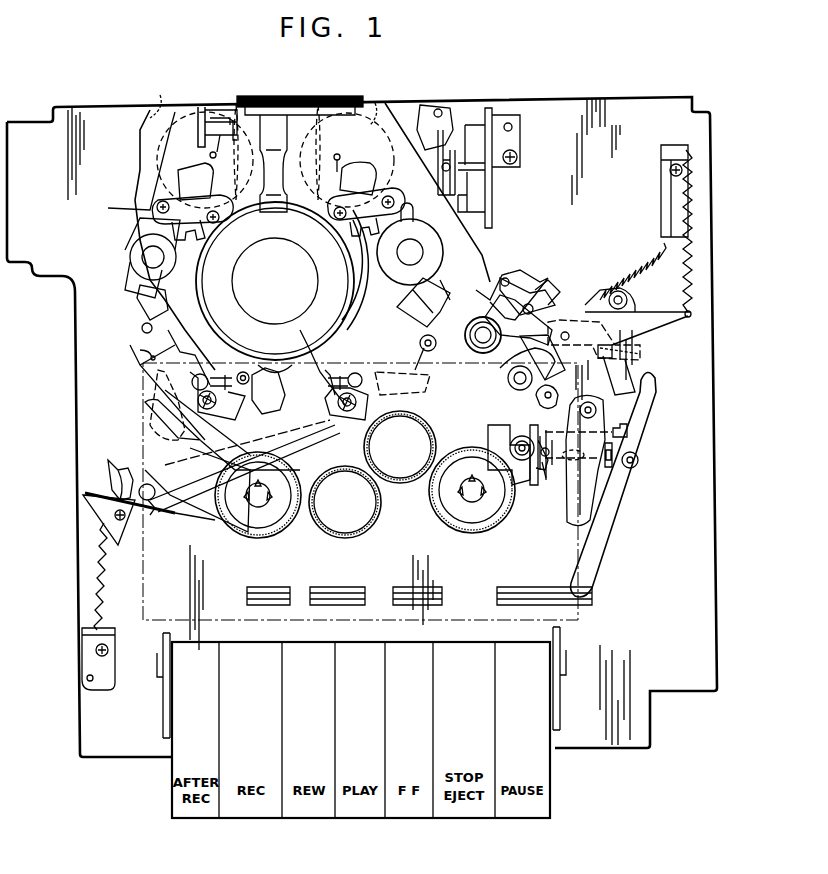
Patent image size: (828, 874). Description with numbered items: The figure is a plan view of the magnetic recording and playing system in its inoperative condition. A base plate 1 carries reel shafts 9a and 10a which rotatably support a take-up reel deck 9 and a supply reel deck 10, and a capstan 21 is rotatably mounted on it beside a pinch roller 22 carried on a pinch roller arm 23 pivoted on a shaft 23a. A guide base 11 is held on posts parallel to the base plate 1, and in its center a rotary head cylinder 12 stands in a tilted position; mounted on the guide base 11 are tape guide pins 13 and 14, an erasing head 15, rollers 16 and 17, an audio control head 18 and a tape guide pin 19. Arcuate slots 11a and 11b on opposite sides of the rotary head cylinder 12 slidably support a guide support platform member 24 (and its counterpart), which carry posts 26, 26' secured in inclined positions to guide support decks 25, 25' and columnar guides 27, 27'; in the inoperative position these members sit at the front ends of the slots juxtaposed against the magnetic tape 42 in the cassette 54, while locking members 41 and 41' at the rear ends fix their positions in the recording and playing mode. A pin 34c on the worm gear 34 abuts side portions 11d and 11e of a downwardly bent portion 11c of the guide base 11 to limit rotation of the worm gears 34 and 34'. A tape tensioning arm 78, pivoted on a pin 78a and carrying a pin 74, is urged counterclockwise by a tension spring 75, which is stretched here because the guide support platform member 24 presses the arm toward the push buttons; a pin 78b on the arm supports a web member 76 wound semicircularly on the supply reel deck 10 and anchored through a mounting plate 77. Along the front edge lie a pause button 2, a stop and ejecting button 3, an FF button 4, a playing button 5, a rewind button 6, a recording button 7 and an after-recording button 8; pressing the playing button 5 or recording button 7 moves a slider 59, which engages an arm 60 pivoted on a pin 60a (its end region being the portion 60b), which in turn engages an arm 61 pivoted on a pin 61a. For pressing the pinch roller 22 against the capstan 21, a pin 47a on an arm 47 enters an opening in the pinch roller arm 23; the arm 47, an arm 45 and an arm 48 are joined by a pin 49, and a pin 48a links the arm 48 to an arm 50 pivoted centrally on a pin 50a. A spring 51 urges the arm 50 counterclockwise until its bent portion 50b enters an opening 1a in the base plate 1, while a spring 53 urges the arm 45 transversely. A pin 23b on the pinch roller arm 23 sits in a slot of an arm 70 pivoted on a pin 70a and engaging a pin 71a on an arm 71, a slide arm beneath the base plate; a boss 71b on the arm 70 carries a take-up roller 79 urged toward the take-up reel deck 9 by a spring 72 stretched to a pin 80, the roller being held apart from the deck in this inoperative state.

The base plate 1 is at (90, 100).
The opening 1a is at (628, 360).
The pause button 2 is at (544, 818).
The stop and ejecting button 3 is at (486, 818).
The FF button 4 is at (426, 818).
The playing button 5 is at (378, 818).
The rewind button 6 is at (329, 818).
The recording button 7 is at (268, 818).
The after-recording button 8 is at (206, 818).
The take-up reel deck 9 is at (463, 458).
The reel shaft 9a is at (465, 500).
The supply reel deck 10 is at (292, 475).
The reel shaft 10a is at (262, 505).
The guide base 11 is at (135, 128).
The arcuate slot 11a is at (170, 330).
The arcuate slot 11b is at (330, 340).
The downwardly bent portion 11c is at (220, 108).
The side portion 11d is at (234, 110).
The side portion 11e is at (204, 105).
The rotary head cylinder 12 is at (215, 310).
The tape guide pin 13 is at (136, 348).
The tape guide pin 14 is at (142, 329).
The erasing head 15 is at (140, 292).
The roller 16 is at (130, 222).
The roller 17 is at (416, 228).
The audio control head 18 is at (429, 296).
The tape guide pin 19 is at (395, 395).
The capstan 21 is at (445, 365).
The pinch roller 22 is at (470, 347).
The pinch roller arm 23 is at (505, 378).
The shaft 23a is at (510, 395).
The pin 23b is at (555, 386).
The guide support platform member 24 is at (148, 426).
The guide support deck 25 is at (217, 396).
The guide support deck 25' is at (328, 404).
The post 26 is at (229, 368).
The post 26' is at (330, 369).
The columnar guide 27 is at (201, 368).
The columnar guide 27' is at (348, 365).
The worm gear 34 is at (150, 96).
The worm gear 34' is at (387, 90).
The pin 34c is at (300, 139).
The locking member 41 is at (198, 201).
The locking member 41' is at (355, 195).
The magnetic tape 42 is at (280, 391).
The arm 45 is at (496, 283).
The arm 47 is at (538, 318).
The pin 47a is at (546, 357).
The arm 48 is at (524, 286).
The pin 48a is at (507, 278).
The pin 49 is at (540, 290).
The arm 50 is at (594, 357).
The pin 50a is at (581, 332).
The bent portion 50b is at (632, 343).
The spring 51 is at (692, 250).
The spring 53 is at (610, 262).
The cassette 54 is at (135, 408).
The slider 59 is at (525, 590).
The arm 60 is at (600, 553).
The pin 60a is at (639, 461).
The lever end 60b is at (656, 380).
The arm 61 is at (635, 300).
The pin 61a is at (622, 293).
The arm 70 is at (623, 497).
The pin 70a is at (612, 403).
The arm 71 is at (630, 432).
The pin 71a is at (620, 447).
The boss 71b is at (496, 426).
The spring 72 is at (538, 487).
The pin 74 is at (258, 362).
The tension spring 75 is at (106, 596).
The web member 76 is at (213, 522).
The mounting plate 77 is at (82, 490).
The tape tensioning arm 78 is at (250, 438).
The pin 78a is at (150, 505).
The pin 78b is at (138, 455).
The take-up roller 79 is at (520, 435).
The pin 80 is at (548, 470).